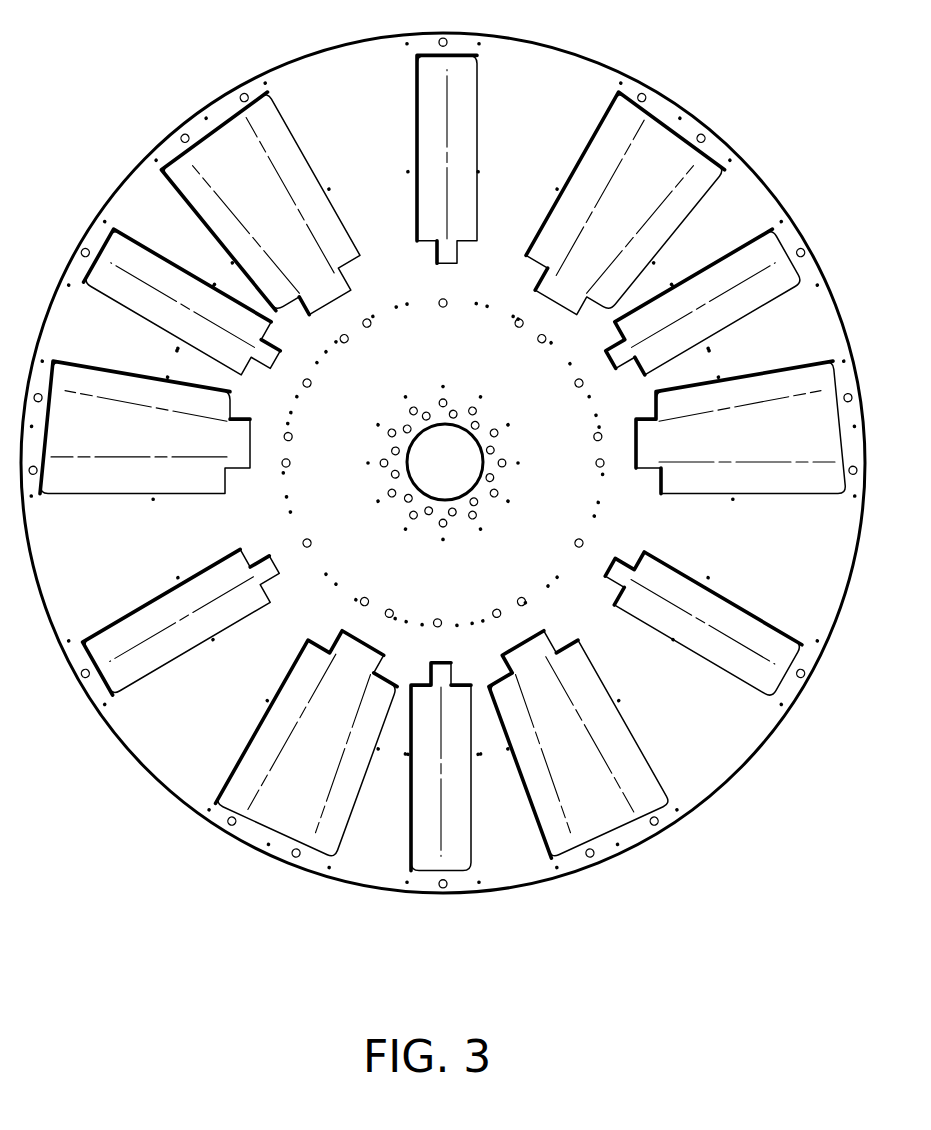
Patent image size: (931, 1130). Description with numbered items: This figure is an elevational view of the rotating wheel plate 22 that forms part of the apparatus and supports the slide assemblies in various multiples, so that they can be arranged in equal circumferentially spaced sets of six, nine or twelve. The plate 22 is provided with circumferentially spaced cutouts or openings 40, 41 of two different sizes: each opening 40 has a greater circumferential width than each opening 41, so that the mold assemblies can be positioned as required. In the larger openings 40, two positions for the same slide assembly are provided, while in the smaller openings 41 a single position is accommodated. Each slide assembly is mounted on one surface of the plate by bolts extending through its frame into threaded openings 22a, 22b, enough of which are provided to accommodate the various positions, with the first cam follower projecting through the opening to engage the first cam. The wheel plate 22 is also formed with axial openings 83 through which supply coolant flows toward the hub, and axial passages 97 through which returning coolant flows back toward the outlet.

The wheel plate 22 is at (566, 63).
The threaded opening 22a is at (681, 117).
The threaded opening 22b is at (654, 263).
The opening 40 is at (222, 159).
The opening 41 is at (448, 86).
The axial opening 83 is at (495, 488).
The axial passage 97 is at (481, 503).